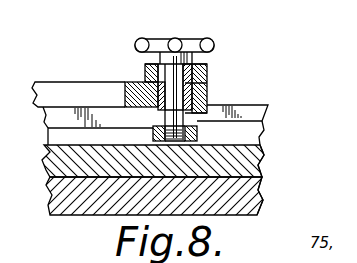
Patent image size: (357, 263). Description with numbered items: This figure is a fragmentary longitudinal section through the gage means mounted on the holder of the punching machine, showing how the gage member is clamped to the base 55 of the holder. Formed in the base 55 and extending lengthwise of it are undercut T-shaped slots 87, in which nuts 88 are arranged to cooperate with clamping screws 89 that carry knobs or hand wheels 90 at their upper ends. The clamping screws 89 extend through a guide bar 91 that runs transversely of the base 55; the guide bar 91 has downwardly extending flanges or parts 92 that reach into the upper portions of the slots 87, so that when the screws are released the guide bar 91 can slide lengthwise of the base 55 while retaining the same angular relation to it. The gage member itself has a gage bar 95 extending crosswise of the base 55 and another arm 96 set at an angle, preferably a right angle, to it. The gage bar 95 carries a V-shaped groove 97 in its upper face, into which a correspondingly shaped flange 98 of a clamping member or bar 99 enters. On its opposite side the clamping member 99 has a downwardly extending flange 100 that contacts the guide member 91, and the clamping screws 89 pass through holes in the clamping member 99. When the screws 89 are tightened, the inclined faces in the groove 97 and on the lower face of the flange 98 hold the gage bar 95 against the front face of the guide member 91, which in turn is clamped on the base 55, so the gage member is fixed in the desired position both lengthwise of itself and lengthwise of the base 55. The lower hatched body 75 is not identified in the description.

The base 55 is at (53, 158).
The base layer 75 is at (255, 190).
The T-shaped slots 87 is at (266, 135).
The nuts 88 is at (203, 149).
The clamping screws 89 is at (206, 89).
The knobs or hand wheels 90 is at (176, 38).
The guide bar 91 is at (207, 98).
The downwardly extending flanges 92 is at (262, 119).
The gage bar 95 is at (125, 96).
The arm 96 is at (55, 88).
The V-shaped groove 97 is at (145, 84).
The flange 98 is at (147, 78).
The clamping member or bar 99 is at (194, 64).
The downwardly extending flange 100 is at (210, 78).